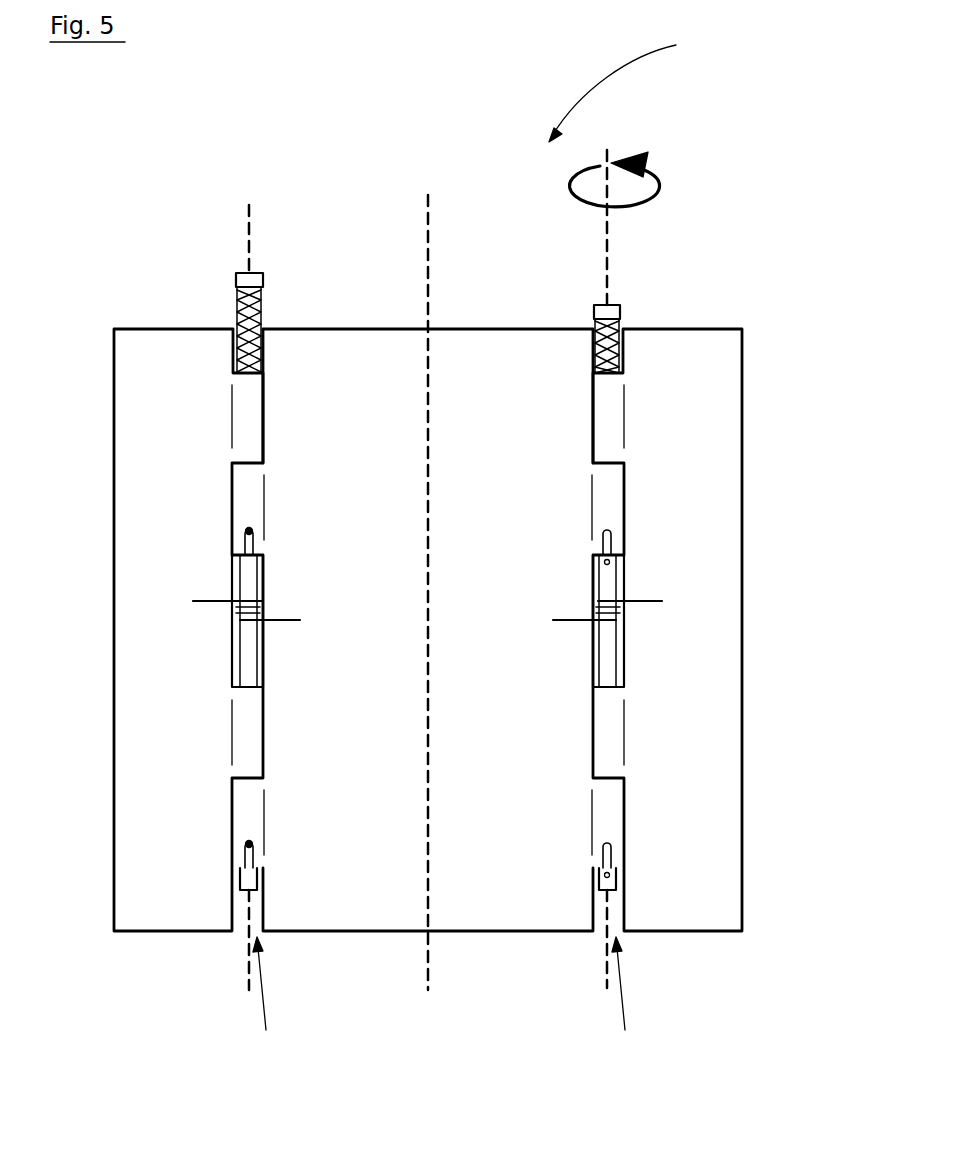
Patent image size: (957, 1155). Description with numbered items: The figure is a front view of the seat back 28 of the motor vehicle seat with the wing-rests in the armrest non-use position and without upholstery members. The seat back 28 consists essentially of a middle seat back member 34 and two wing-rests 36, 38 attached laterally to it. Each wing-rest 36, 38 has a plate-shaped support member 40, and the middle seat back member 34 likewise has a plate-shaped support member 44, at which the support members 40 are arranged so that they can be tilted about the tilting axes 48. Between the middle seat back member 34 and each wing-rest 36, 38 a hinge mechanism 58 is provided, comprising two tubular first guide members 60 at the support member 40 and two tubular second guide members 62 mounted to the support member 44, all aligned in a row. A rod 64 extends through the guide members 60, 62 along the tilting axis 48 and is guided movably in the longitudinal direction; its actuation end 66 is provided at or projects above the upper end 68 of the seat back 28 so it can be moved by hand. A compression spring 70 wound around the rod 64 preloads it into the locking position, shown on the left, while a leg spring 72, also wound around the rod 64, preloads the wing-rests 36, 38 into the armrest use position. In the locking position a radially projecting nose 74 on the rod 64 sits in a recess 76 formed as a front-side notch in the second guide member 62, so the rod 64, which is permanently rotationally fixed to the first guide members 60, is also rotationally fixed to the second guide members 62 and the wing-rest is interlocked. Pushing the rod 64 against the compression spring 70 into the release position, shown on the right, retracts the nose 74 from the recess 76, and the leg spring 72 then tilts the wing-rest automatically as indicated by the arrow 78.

The seat back 28 is at (627, 84).
The middle seat back member 34 is at (428, 593).
The wing-rest 36 is at (693, 321).
The wing-rest 38 is at (150, 323).
The plate-shaped support member 40 is at (423, 621).
The plate-shaped support member 44 is at (473, 903).
The second tilting axis 48 is at (247, 223).
The hinge mechanism 58 is at (448, 998).
The first guide member 60 is at (247, 414).
The second guide member 62 is at (245, 492).
The rod 64 is at (245, 578).
The actuation end 66 is at (251, 281).
The upper end 68 is at (360, 328).
The compression spring 70 is at (236, 318).
The leg spring 72 is at (218, 603).
The radially projecting nose 74 is at (240, 528).
The recess 76 is at (240, 546).
The arrow 78 is at (657, 190).